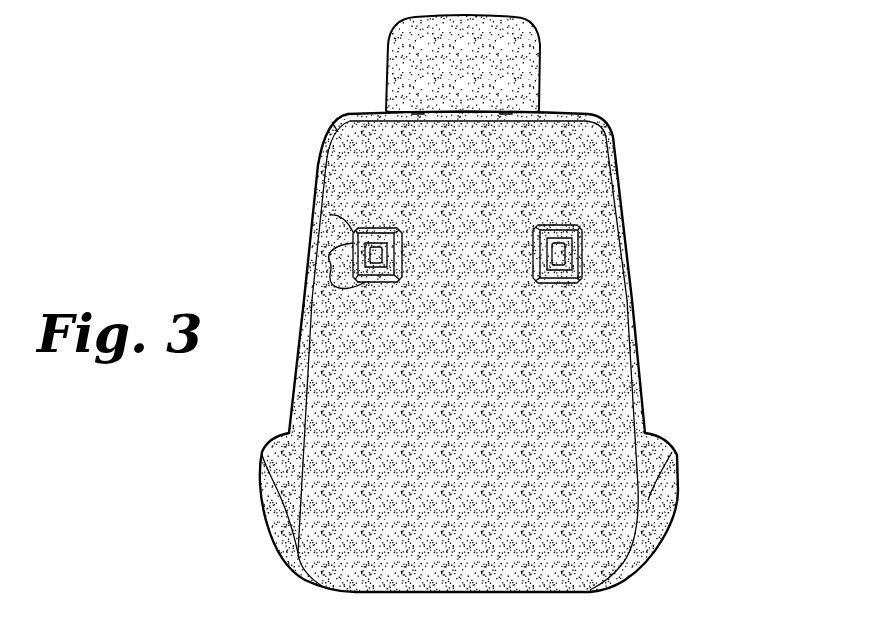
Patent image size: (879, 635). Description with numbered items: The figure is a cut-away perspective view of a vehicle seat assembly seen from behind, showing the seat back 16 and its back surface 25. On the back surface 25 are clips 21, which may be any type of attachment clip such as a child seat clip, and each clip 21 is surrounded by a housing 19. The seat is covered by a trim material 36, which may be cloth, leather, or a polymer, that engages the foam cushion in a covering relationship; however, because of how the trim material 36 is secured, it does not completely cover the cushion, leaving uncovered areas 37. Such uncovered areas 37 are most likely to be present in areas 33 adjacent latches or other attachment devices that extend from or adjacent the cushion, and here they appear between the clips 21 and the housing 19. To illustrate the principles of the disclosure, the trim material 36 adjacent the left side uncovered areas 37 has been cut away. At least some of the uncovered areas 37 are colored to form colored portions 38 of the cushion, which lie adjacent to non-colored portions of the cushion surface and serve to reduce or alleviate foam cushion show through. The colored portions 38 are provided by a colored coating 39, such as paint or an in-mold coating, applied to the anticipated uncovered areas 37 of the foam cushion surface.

The seat back 16 is at (638, 342).
The housing 19 is at (383, 281).
The clip 21 is at (378, 253).
The back surface 25 is at (474, 444).
The areas adjacent latches or other attachment devices 33 is at (558, 262).
The trim material 36 is at (292, 410).
The uncovered areas 37 is at (373, 255).
The colored portions 38 is at (340, 220).
The colored coating 39 is at (340, 238).